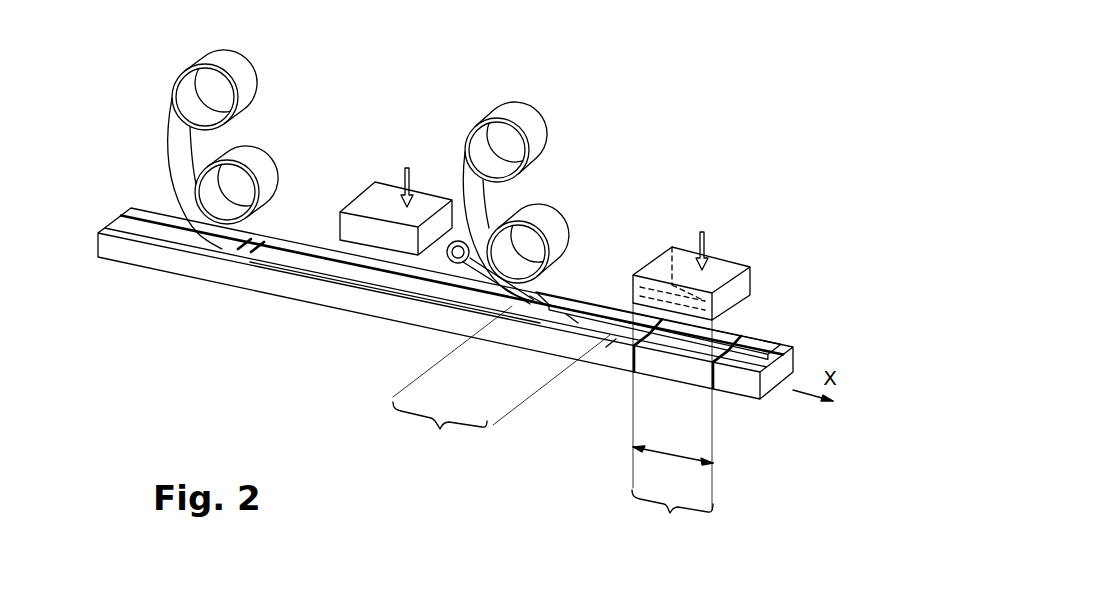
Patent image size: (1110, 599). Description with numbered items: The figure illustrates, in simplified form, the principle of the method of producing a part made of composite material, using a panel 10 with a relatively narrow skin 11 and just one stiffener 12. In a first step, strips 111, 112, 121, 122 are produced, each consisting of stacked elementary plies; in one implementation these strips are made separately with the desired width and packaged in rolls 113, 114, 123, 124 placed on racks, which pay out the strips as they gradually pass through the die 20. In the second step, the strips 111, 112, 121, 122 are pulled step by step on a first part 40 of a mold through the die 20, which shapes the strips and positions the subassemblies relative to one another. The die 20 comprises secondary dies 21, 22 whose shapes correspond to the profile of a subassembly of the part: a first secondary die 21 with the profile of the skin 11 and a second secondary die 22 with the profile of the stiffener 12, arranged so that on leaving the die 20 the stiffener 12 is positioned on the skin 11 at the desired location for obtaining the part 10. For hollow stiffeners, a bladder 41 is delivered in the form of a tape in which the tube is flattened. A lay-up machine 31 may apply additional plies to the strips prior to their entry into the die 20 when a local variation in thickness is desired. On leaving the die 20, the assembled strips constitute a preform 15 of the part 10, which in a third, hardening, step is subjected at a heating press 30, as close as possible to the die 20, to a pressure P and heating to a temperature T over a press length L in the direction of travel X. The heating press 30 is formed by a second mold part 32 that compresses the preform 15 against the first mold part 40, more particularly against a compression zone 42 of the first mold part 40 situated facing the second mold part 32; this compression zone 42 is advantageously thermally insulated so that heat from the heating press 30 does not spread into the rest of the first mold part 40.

The panel 10 is at (773, 340).
The skin 11 is at (345, 270).
The stiffener 12 is at (753, 357).
The preform 15 is at (612, 343).
The die 20 is at (501, 382).
The first secondary die 21 is at (532, 332).
The second secondary die 22 is at (557, 328).
The heating press 30 is at (672, 423).
The lay-up machine 31 is at (360, 184).
The second mold part 32 is at (737, 252).
The first part of a mold 40 is at (257, 278).
The bladder 41 is at (458, 263).
The compression zone 42 is at (647, 367).
The strip 111 is at (217, 240).
The strip 112 is at (183, 152).
The roll 113 is at (260, 167).
The roll 114 is at (228, 62).
The strip 121 is at (563, 276).
The strip 122 is at (467, 225).
The roll 123 is at (557, 223).
The roll 124 is at (505, 110).